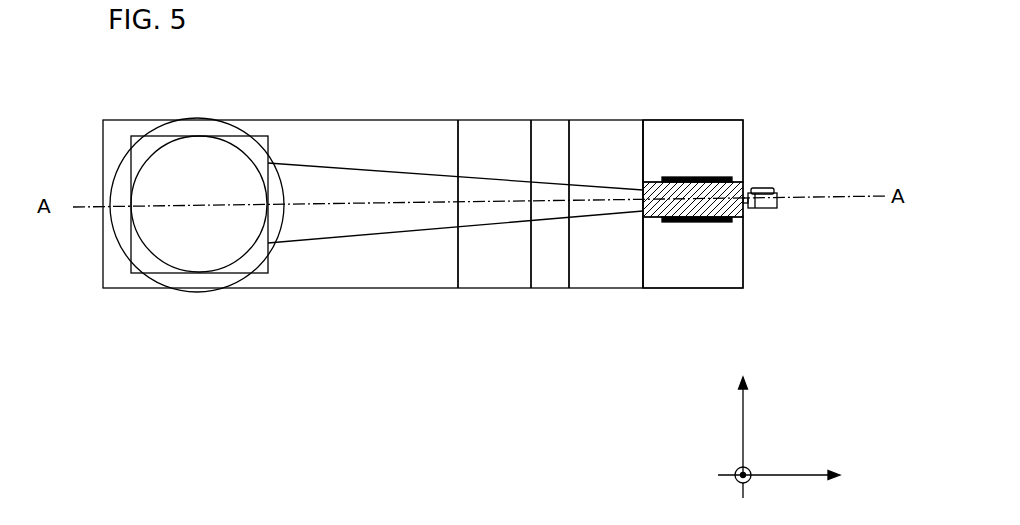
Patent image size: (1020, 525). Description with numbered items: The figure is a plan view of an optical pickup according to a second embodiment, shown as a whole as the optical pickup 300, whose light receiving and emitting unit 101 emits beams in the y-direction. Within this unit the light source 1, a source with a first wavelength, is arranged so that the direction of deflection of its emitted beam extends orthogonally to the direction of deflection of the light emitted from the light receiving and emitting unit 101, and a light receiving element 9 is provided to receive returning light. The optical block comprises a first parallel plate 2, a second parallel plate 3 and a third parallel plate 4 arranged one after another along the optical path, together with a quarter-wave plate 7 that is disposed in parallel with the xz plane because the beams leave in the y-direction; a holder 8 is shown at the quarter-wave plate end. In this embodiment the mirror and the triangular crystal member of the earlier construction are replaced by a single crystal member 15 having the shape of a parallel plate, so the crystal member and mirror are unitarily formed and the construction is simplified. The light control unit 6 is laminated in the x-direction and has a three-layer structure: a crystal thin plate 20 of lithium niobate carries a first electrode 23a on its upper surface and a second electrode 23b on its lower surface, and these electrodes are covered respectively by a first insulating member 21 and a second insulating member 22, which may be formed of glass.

The light source 1 is at (778, 200).
The first parallel plate 2 is at (488, 278).
The second parallel plate 3 is at (588, 278).
The third parallel plate 4 is at (546, 278).
The light control unit 6 is at (820, 367).
The quarter-wave plate 7 is at (227, 285).
The lens holder 8 is at (146, 130).
The light receiving element 9 is at (772, 188).
The crystal member 15 is at (382, 275).
The crystal thin plate 20 is at (653, 176).
The first insulating member 21 is at (730, 133).
The second insulating member 22 is at (686, 290).
The first electrode 23a is at (695, 177).
The second electrode 23b is at (663, 290).
The light receiving and emitting unit 101 is at (570, 362).
The optical module 300 is at (448, 78).